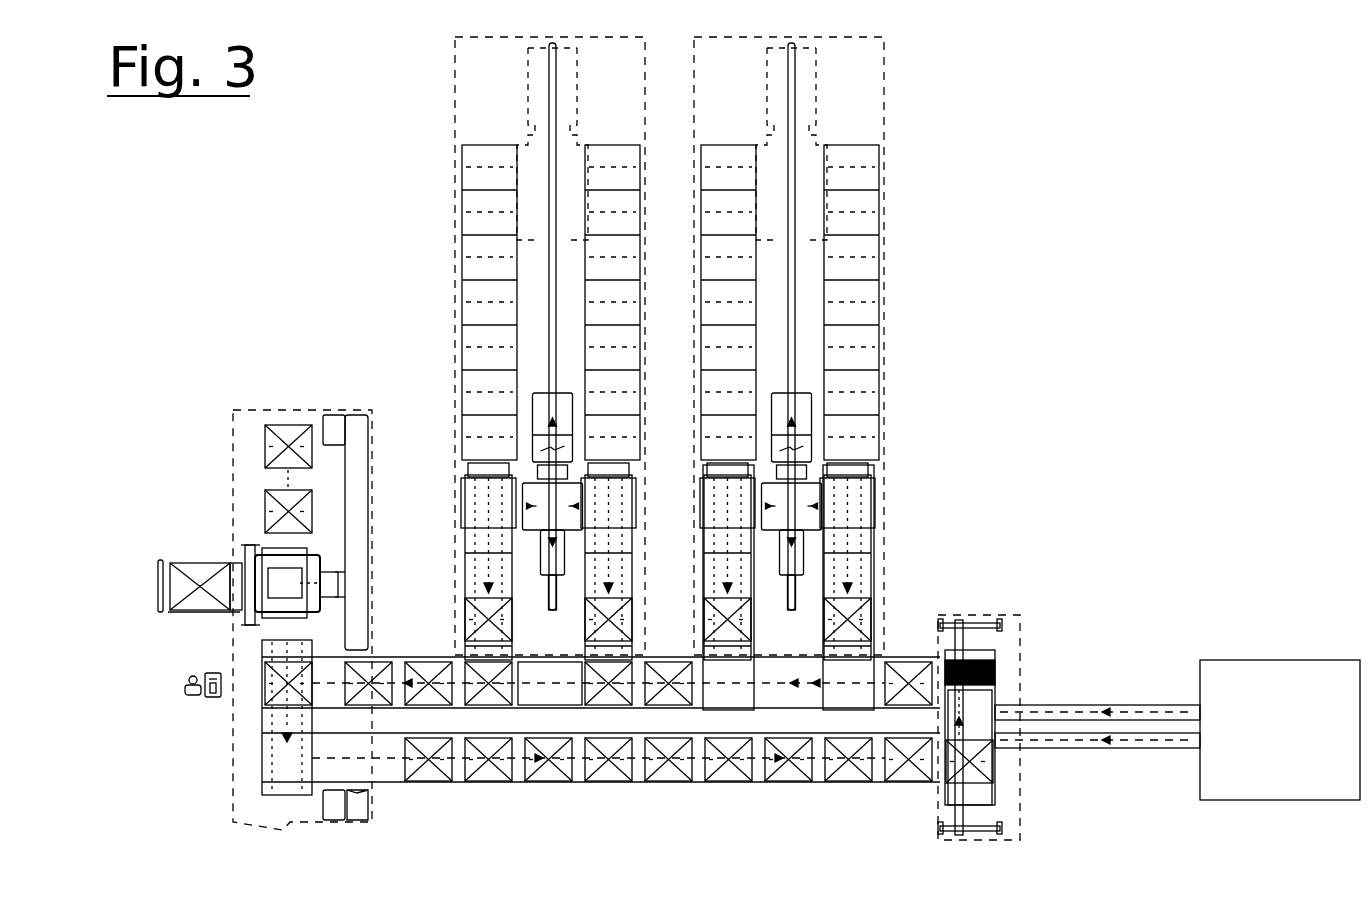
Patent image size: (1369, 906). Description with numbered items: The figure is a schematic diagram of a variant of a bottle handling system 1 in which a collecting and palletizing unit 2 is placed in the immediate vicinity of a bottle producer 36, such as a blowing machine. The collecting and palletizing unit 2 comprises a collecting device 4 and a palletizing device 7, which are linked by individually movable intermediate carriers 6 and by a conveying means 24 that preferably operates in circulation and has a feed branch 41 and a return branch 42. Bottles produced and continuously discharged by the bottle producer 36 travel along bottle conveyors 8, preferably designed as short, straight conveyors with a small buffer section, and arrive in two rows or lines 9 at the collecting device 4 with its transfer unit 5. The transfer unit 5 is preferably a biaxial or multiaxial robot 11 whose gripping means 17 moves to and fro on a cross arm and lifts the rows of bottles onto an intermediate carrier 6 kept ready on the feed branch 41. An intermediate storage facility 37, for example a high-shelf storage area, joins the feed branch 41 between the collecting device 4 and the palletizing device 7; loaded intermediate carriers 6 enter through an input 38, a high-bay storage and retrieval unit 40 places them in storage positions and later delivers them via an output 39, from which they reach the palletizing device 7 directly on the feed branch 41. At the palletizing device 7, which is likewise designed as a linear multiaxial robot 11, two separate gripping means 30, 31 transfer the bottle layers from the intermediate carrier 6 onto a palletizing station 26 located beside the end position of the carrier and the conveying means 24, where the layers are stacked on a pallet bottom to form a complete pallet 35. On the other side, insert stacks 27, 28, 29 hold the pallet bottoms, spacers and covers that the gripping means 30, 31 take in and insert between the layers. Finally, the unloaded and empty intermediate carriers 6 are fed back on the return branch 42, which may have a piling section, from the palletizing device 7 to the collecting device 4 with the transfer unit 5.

The bottle handling system 1 is at (208, 508).
The collecting and palletizing unit 2 is at (208, 508).
The collecting device 4 is at (1030, 660).
The transfer unit 5 is at (1025, 586).
The intermediate carrier 6 is at (486, 628).
The palletizing device 7 is at (208, 508).
The bottle conveyor 8 is at (1142, 746).
The rows or lines 9 is at (1097, 706).
The robot 11 is at (962, 615).
The gripping means 17 is at (998, 678).
The conveying means 24 is at (668, 700).
The palletizing station 26 is at (362, 345).
The insert stack 27 is at (227, 433).
The insert stack 28 is at (227, 433).
The insert stack 29 is at (272, 510).
The gripping means 30 is at (346, 564).
The gripping means 31 is at (343, 573).
The pallet 35 is at (203, 578).
The bottle producer 36 is at (1278, 692).
The intermediate storage facility 37 is at (844, 373).
The input 38 is at (843, 578).
The output 39 is at (713, 568).
The high-bay storage and retrieval unit 40 is at (790, 507).
The feed branch 41 is at (557, 697).
The return branch 42 is at (642, 778).